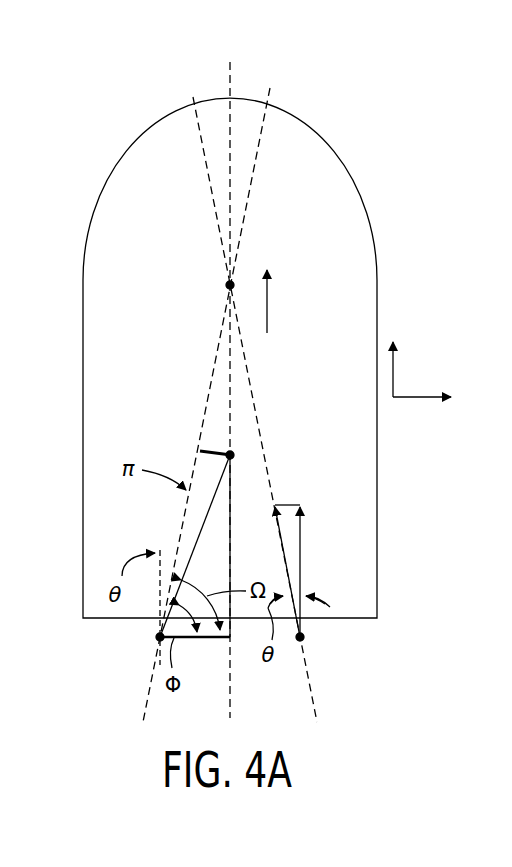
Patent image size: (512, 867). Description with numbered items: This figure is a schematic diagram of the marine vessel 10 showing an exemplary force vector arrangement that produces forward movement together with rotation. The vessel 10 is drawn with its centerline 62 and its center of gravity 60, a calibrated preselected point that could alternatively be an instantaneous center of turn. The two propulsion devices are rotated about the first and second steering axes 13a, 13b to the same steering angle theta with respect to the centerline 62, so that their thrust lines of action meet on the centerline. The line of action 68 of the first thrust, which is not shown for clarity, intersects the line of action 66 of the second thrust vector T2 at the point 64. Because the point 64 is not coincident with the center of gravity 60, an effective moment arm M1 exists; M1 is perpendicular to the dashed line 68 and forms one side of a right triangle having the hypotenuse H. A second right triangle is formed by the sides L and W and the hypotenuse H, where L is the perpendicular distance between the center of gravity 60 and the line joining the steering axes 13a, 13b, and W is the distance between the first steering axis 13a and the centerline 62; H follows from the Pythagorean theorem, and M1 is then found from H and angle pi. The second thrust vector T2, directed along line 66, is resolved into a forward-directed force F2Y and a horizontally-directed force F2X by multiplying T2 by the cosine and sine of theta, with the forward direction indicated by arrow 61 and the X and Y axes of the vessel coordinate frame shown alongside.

The marine vessel 10 is at (377, 272).
The first steering axis 13a is at (157, 637).
The second steering axis 13b is at (305, 637).
The center of gravity 60 is at (233, 452).
The travel direction arrow 61 is at (268, 305).
The centerline 62 is at (232, 82).
The point 64 is at (227, 286).
The line of action 66 is at (190, 95).
The line of action 68 is at (272, 95).
The second thrust vector T2 is at (283, 558).
The horizontally-directed force F2X is at (290, 505).
The forward-directed force F2Y is at (303, 565).
The moment arm M1 is at (215, 448).
The perpendicular distance L is at (216, 504).
The hypotenuse H is at (198, 535).
The distance W is at (207, 640).
The X axis X is at (417, 398).
The Y axis Y is at (395, 373).